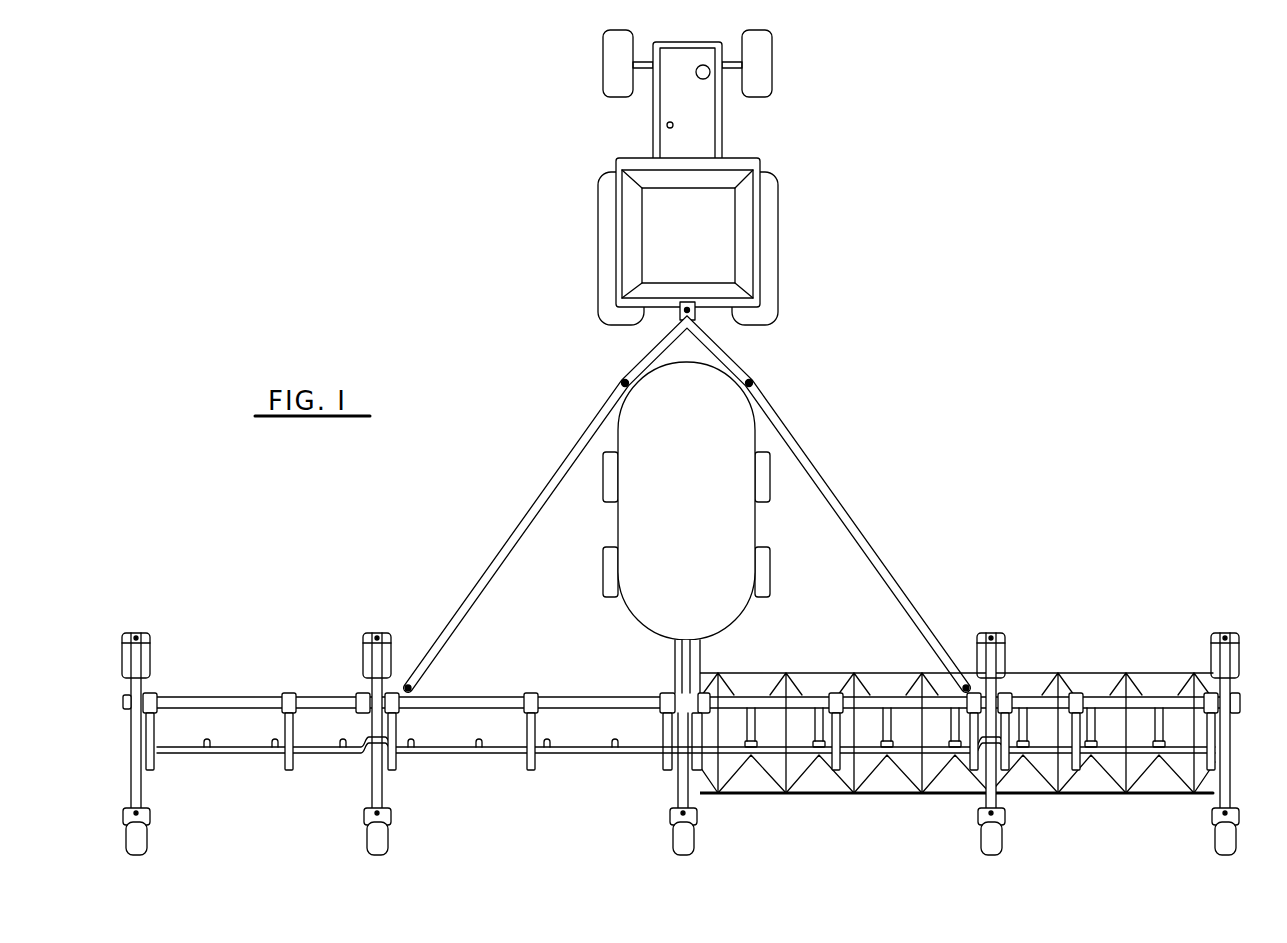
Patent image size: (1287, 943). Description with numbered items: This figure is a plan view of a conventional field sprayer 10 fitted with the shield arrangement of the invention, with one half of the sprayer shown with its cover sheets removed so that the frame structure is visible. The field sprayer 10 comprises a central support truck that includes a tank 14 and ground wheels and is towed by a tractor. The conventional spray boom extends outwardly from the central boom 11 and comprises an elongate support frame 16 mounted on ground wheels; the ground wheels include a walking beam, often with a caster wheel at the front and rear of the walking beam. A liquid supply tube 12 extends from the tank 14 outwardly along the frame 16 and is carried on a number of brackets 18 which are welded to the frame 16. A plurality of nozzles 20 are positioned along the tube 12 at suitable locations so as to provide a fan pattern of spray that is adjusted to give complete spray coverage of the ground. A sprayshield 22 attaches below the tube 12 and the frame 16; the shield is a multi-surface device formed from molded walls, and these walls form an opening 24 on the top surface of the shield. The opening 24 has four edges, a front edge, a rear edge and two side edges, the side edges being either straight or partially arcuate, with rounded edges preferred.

The field sprayer 10 is at (915, 235).
The central boom 11 is at (676, 661).
The liquid supply tube 12 is at (460, 757).
The tank 14 is at (644, 516).
The frame 16 is at (466, 693).
The brackets 18 is at (537, 768).
The nozzles 20 is at (753, 742).
The sprayshield 22 is at (862, 798).
The opening 24 is at (1158, 737).